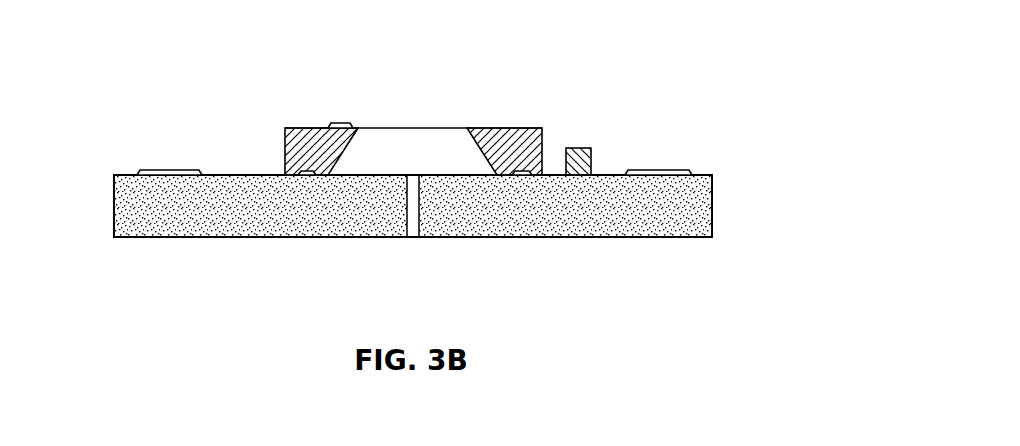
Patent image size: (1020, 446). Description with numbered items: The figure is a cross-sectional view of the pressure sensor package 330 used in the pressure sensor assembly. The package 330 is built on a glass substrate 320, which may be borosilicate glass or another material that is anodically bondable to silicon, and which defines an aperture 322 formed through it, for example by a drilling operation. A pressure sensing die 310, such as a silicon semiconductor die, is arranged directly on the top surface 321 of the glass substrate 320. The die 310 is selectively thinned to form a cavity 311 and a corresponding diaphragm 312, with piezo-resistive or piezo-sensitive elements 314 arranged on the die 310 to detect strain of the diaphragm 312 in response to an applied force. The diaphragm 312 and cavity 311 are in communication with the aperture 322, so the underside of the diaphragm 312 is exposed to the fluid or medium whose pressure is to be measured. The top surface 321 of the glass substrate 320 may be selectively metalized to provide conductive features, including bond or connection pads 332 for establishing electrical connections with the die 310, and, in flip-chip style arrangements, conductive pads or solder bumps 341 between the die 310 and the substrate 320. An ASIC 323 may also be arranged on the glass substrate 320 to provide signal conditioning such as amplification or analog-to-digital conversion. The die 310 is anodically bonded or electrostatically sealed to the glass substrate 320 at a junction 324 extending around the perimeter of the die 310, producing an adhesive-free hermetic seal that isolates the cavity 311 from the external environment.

The pressure sensor package 330 is at (147, 43).
The glass substrate 320 is at (702, 208).
The aperture 322 is at (413, 237).
The top surface 321 is at (232, 173).
The bond or connection pads 332 is at (158, 169).
The pressure sensing die 310 is at (524, 138).
The diaphragm 312 is at (442, 127).
The cavity 311 is at (392, 160).
The piezo-resistive or piezo-sensitive elements 314 is at (342, 122).
The conductive pads and/or solder bumps 341 is at (303, 163).
The junction 324 is at (277, 166).
The ASIC 323 is at (582, 148).